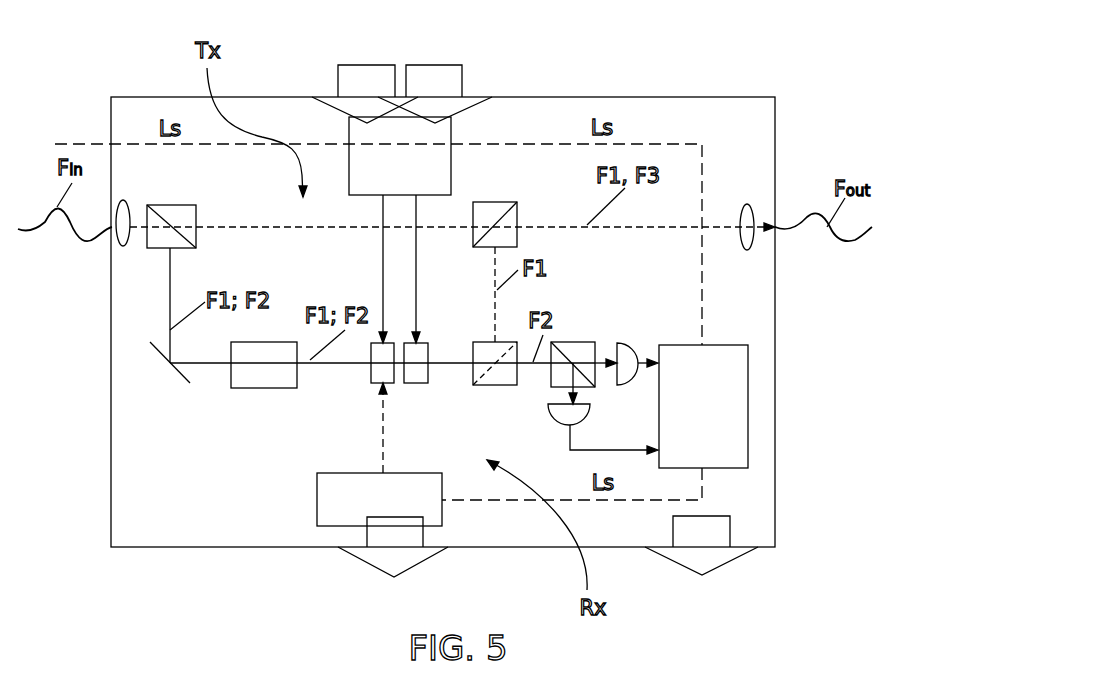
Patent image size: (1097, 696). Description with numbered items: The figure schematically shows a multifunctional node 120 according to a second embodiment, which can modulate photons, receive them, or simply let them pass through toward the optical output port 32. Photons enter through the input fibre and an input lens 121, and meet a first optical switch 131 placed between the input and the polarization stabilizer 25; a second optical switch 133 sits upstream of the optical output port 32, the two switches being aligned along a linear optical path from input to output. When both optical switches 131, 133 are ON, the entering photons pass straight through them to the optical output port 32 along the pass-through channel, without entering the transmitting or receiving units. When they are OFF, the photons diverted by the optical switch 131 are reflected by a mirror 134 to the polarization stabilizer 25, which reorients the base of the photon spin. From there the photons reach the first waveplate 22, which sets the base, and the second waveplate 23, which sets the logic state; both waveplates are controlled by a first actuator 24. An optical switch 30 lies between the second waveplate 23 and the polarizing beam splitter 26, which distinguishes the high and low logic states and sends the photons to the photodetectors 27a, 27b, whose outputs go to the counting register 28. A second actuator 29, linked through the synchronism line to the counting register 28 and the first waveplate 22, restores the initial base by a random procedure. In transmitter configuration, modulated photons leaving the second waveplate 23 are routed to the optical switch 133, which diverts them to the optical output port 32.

The multifunctional node 120 is at (632, 97).
The input lens 121 is at (117, 238).
The optical switch 131 is at (170, 205).
The optical switch 133 is at (517, 215).
The mirror 134 is at (158, 357).
The first actuator 24 is at (430, 164).
The polarization stabilizer 25 is at (263, 375).
The first waveplate 22 is at (378, 372).
The second waveplate 23 is at (419, 377).
The optical switch 30 is at (493, 385).
The polarizing beam splitter 26 is at (575, 342).
The photodetector 27a is at (632, 347).
The photodetector 27b is at (555, 423).
The counting register 28 is at (747, 405).
The second actuator 29 is at (317, 500).
The optical output port 32 is at (747, 213).